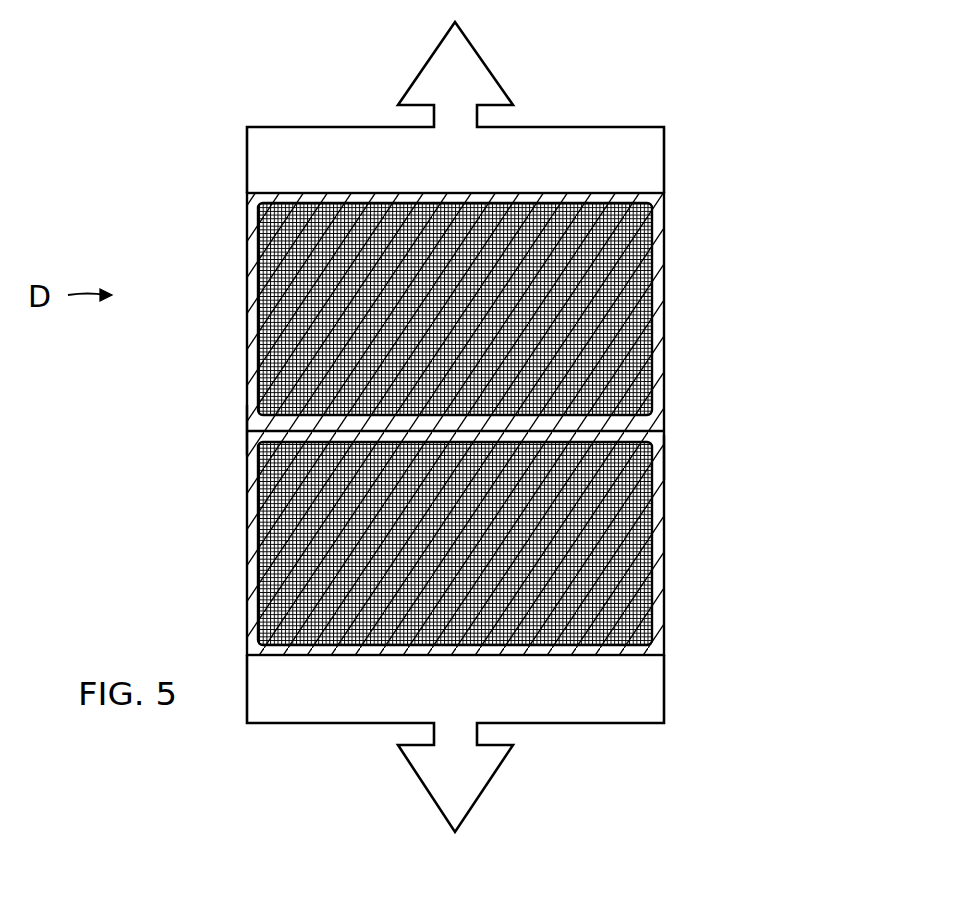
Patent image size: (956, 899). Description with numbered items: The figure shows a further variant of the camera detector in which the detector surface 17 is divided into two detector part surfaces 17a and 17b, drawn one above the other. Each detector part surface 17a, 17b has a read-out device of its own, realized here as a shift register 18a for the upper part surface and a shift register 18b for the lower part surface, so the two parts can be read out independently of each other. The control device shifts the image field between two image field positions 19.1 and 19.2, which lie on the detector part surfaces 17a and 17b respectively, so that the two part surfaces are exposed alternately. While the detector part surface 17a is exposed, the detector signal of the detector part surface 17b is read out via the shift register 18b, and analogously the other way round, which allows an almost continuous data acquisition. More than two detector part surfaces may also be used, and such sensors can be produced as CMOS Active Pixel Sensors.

The detector surface 17 is at (663, 255).
The detector part surface 17a is at (255, 420).
The detector part surface 17b is at (663, 452).
The shift register 18a is at (277, 135).
The shift register 18b is at (600, 715).
The image field position 19.1 is at (637, 328).
The image field position 19.2 is at (637, 545).